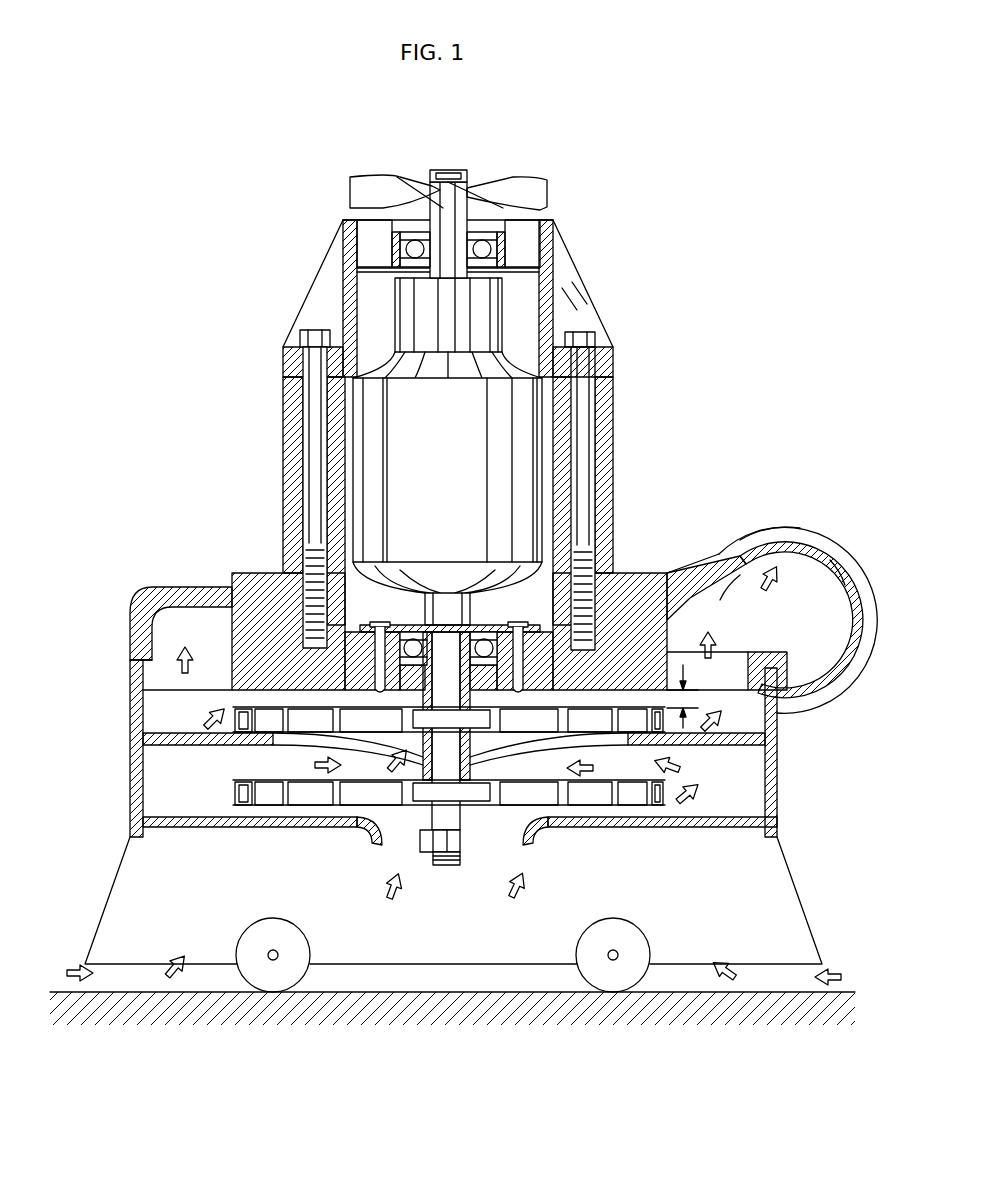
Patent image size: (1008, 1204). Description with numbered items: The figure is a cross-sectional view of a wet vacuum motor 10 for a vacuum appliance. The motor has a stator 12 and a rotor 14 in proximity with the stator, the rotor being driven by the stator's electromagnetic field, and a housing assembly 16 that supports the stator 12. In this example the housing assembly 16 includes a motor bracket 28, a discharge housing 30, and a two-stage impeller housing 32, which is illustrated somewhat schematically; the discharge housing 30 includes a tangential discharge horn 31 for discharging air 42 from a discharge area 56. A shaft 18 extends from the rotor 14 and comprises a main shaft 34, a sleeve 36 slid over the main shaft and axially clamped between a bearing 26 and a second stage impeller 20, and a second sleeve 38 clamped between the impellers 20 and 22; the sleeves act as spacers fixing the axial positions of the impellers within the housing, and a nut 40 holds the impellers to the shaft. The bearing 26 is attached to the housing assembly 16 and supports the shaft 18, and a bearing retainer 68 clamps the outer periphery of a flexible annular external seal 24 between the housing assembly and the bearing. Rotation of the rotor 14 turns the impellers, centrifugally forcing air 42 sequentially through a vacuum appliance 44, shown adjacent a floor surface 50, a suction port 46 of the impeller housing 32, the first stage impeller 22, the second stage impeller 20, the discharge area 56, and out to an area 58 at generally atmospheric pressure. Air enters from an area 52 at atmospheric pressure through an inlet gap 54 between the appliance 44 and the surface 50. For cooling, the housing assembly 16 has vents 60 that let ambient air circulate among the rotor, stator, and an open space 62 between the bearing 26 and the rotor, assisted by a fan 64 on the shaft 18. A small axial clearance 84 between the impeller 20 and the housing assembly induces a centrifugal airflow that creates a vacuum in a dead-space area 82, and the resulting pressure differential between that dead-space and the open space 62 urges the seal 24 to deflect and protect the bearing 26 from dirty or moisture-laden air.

The wet vacuum motor 10 is at (745, 283).
The stator 12 is at (613, 468).
The rotor 14 is at (355, 455).
The housing assembly 16 is at (283, 365).
The shaft 18 is at (452, 170).
The second stage impeller 20 is at (235, 718).
The first stage impeller 22 is at (250, 783).
The external seal 24 is at (500, 710).
The bearing 26 is at (483, 632).
The motor bracket 28 is at (613, 365).
The discharge housing 30 is at (838, 562).
The tangential discharge horn 31 is at (772, 527).
The two-stage impeller housing 32 is at (130, 703).
The main shaft 34 is at (438, 170).
The sleeve 36 is at (425, 693).
The second sleeve 38 is at (485, 765).
The nut 40 is at (458, 855).
The air 42 is at (762, 565).
The vacuum appliance 44 is at (105, 895).
The suction port 46 is at (380, 842).
The floor surface 50 is at (465, 992).
The area 52 is at (873, 952).
The inlet gap 54 is at (772, 975).
The discharge area 56 is at (788, 637).
The area 58 is at (825, 484).
The vents 60 is at (530, 237).
The open space 62 is at (387, 610).
The fan 64 is at (548, 192).
The bearing retainer 68 is at (400, 625).
The dead-space area 82 is at (422, 678).
The axial clearance 84 is at (690, 676).